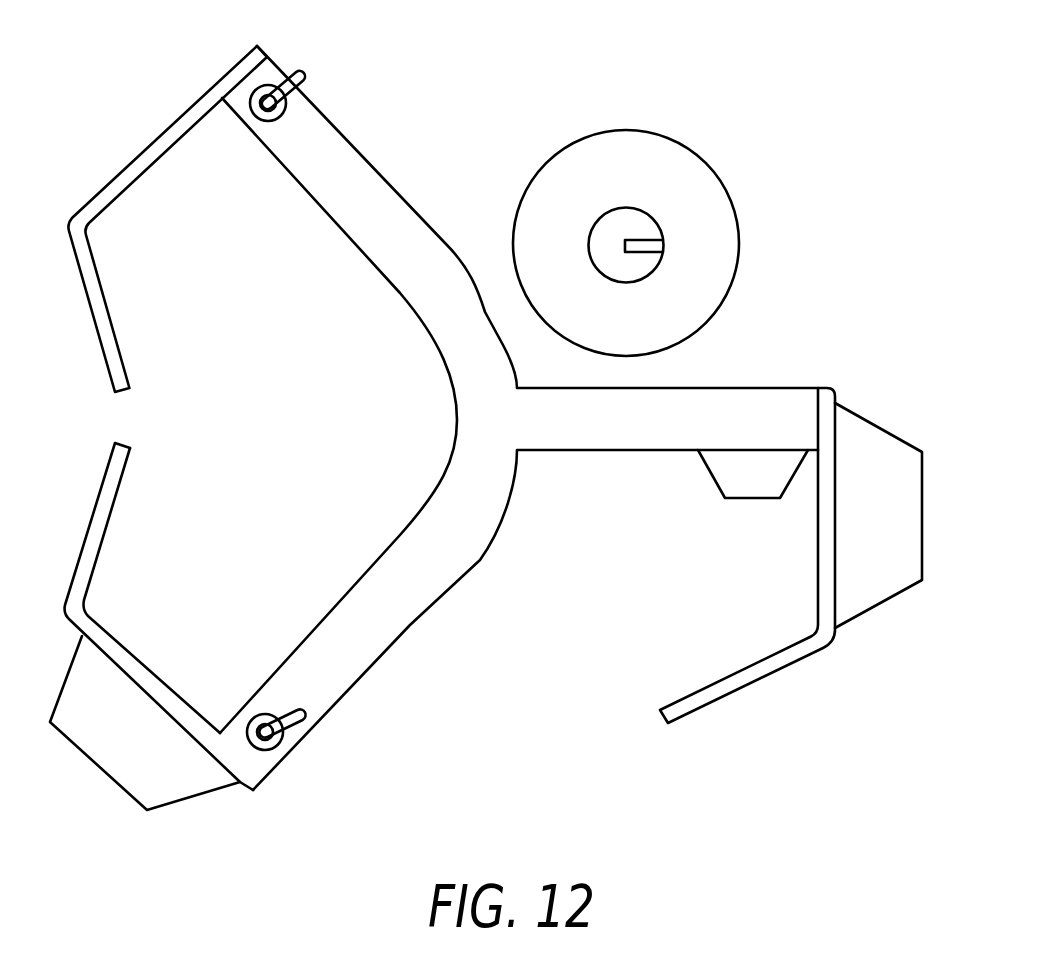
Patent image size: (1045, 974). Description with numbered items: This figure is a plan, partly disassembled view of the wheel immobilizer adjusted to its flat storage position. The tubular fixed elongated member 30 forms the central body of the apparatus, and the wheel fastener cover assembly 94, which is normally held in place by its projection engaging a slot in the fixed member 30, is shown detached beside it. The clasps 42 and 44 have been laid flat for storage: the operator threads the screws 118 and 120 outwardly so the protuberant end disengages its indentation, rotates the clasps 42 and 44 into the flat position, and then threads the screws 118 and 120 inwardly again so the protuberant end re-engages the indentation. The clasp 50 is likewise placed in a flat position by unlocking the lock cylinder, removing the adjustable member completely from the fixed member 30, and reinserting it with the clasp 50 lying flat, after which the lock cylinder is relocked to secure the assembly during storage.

The fixed elongated member 30 is at (627, 425).
The clasp 42 is at (107, 332).
The clasp 44 is at (107, 492).
The clasp 50 is at (738, 683).
The wheel fastener cover assembly 94 is at (668, 124).
The screw 118 is at (300, 73).
The screw 120 is at (290, 725).